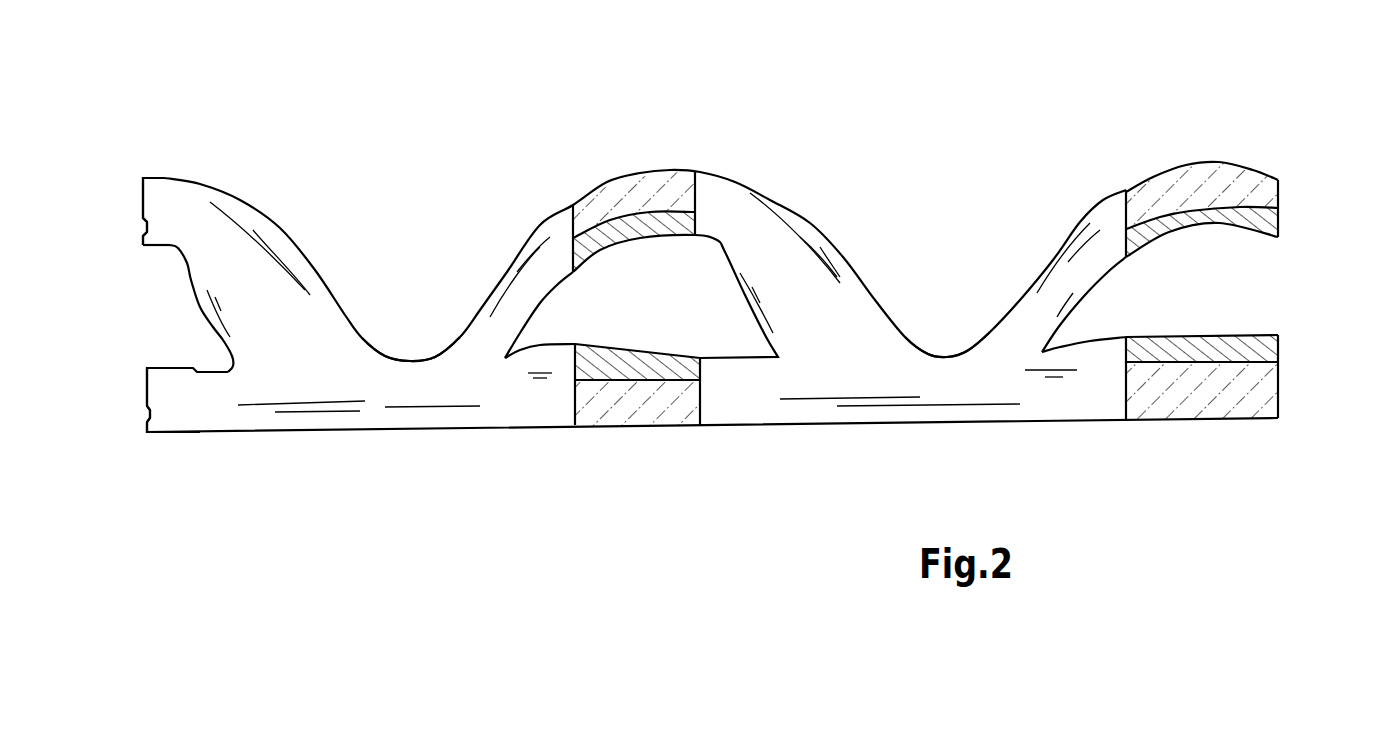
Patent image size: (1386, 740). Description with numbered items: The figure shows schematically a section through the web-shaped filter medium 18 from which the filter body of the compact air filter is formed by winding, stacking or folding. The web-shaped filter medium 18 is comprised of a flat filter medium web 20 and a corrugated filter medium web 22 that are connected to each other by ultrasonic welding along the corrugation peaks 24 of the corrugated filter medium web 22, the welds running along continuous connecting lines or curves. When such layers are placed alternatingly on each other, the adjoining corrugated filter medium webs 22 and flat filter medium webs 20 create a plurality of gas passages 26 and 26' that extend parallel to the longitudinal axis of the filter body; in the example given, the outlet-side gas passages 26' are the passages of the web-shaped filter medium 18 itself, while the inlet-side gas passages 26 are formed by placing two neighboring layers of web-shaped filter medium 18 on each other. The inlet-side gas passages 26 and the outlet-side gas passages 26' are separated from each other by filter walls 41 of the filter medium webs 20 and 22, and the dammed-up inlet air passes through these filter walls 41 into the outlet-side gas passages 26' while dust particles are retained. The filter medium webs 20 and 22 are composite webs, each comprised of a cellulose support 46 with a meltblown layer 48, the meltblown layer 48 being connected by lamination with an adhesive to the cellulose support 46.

The web-shaped filter medium 18 is at (240, 131).
The flat filter medium web 20 is at (139, 405).
The corrugated filter medium web 22 is at (138, 208).
The corrugation peaks 24 is at (421, 351).
The gas passage 26 is at (713, 290).
The gas passage 26' is at (655, 257).
The filter walls 41 is at (1093, 256).
The cellulose support 46 is at (1258, 193).
The meltblown layer 48 is at (1266, 226).